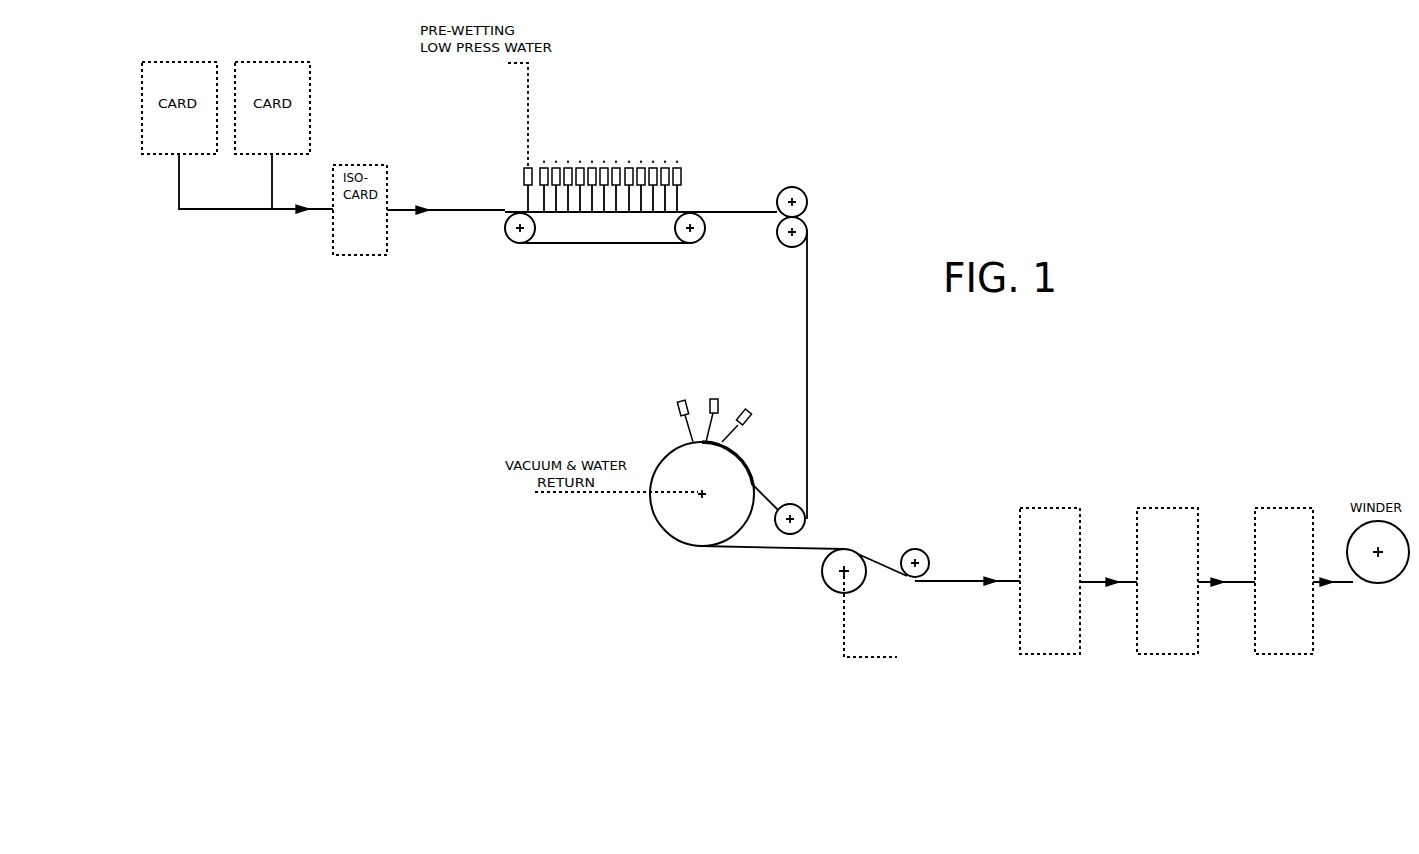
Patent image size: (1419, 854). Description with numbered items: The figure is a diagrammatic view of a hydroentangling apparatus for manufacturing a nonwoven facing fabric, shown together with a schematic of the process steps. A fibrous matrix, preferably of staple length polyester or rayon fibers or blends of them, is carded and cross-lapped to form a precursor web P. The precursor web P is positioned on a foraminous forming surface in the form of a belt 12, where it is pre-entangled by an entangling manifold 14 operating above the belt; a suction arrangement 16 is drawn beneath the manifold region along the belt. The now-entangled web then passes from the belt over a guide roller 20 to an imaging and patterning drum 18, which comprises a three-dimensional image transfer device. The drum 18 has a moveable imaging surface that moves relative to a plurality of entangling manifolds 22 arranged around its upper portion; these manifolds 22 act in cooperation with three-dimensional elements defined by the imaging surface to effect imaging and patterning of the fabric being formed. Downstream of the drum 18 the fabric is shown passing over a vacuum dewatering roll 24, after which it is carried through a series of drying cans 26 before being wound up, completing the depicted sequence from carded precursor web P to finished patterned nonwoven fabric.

The precursor web P is at (455, 212).
The belt 12 is at (637, 245).
The entangling manifold 14 is at (680, 178).
The suction boxes 16 is at (678, 198).
The imaging and patterning drum 18 is at (672, 520).
The guide roller 20 is at (792, 505).
The entangling manifolds 22 is at (710, 402).
The vacuum dewatering roller 24 is at (837, 592).
The drying cans 26 is at (1138, 512).